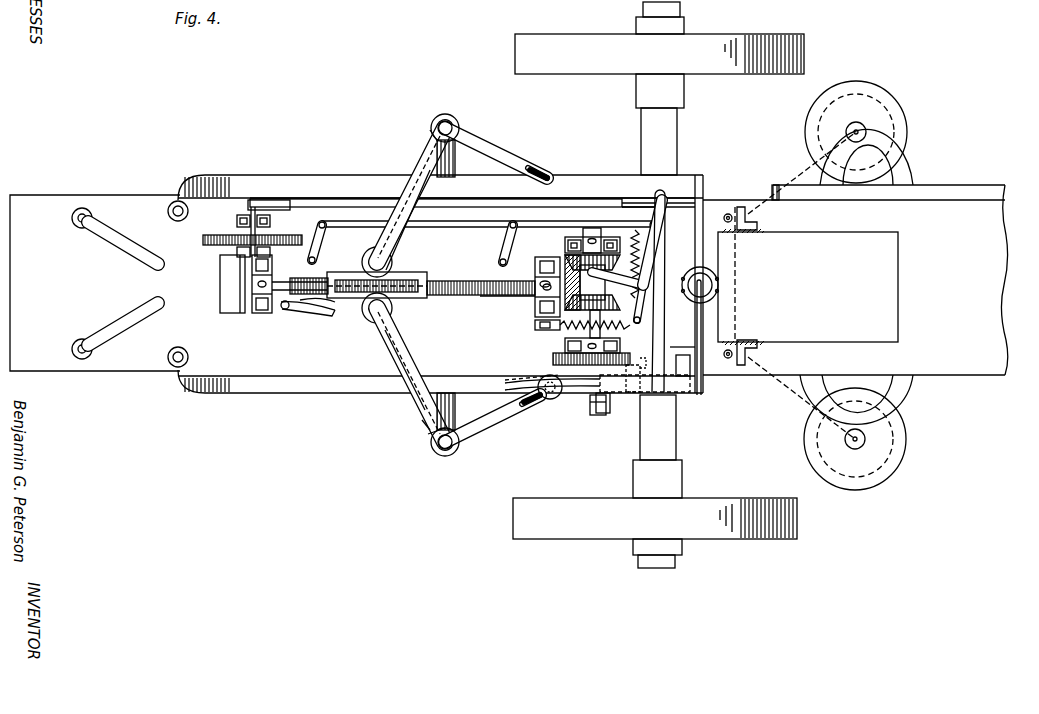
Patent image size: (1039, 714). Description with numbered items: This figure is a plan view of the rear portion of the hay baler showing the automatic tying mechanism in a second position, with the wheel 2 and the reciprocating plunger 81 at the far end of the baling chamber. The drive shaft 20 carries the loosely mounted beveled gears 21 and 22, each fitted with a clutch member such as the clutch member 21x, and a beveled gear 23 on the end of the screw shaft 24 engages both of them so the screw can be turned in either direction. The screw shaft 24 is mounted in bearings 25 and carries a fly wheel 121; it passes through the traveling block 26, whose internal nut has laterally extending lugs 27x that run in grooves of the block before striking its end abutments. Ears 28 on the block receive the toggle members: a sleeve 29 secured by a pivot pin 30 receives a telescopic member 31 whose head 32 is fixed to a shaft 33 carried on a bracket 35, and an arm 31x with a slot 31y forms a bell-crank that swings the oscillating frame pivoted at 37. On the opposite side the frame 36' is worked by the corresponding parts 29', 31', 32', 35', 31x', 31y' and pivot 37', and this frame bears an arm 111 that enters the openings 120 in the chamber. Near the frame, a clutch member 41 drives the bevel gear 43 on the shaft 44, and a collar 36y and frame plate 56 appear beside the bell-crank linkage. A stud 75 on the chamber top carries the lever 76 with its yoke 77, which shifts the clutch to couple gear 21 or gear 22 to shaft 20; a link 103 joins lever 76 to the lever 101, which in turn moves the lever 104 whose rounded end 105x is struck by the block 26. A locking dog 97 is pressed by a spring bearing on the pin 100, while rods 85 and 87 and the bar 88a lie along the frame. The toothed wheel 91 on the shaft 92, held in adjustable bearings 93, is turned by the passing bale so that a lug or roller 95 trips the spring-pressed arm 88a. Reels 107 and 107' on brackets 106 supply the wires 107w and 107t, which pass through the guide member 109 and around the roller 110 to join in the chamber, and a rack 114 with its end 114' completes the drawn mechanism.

The wheel 2 is at (708, 40).
The shaft 20 is at (588, 330).
The beveled gear 21 is at (641, 318).
The clutch member 21x is at (626, 298).
The beveled gear 22 is at (607, 258).
The beveled gear 23 is at (576, 250).
The screw shaft 24 is at (482, 294).
The bearings 25 is at (264, 313).
The traveling block 26 is at (426, 274).
The lugs 27x is at (352, 280).
The ears 28 is at (411, 262).
The sleeve or telescopic member 29 is at (411, 375).
The sleeve or telescopic member 29' is at (411, 195).
The pivot pin 30 is at (396, 306).
The telescopic member 31 is at (405, 434).
The telescopic member 31' is at (423, 118).
The arm 31x is at (492, 424).
The arm 31x' is at (496, 145).
The slot 31y is at (540, 412).
The slot 31y' is at (551, 156).
The head 32 is at (448, 453).
The pivot pin 32' is at (454, 116).
The shaft 33 is at (437, 450).
The bracket 35 is at (535, 411).
The bracket 35' is at (459, 160).
The oscillating frame 36' is at (476, 176).
The collar 36y is at (538, 388).
The pivot 37 is at (161, 375).
The pivot 37' is at (161, 192).
The clutch member 41 is at (576, 372).
The bevel gear 43 is at (596, 412).
The shaft 44 is at (684, 393).
The frame 56 is at (286, 388).
The stud or shaft 75 is at (690, 298).
The lever 76 is at (655, 243).
The yoke 77 is at (634, 284).
The reciprocating plunger 81 is at (977, 197).
The rod 85 is at (626, 198).
The rail 87 is at (358, 199).
The spring-pressed arm 88a is at (276, 199).
The toothed wheel 91 is at (212, 246).
The shaft 92 is at (258, 232).
The adjustable bearings 93 is at (237, 221).
The lug or roller 95 is at (251, 203).
The locking dog 97 is at (306, 314).
The pin or lug 100 is at (342, 318).
The lever 101 is at (308, 244).
The link 103 is at (507, 243).
The lever 104 is at (503, 262).
The rounded end 105x is at (530, 296).
The brackets 106 is at (914, 176).
The upper reel 107 is at (872, 439).
The upper reel 107' is at (871, 132).
The wire 107t is at (762, 216).
The wire 107w is at (768, 355).
The guide member 109 is at (743, 206).
The roller 110 is at (718, 287).
The arm 111 is at (708, 258).
The rack 114 is at (601, 343).
The rack end 114' is at (658, 352).
The openings 120 is at (672, 206).
The fly wheel 121 is at (236, 300).